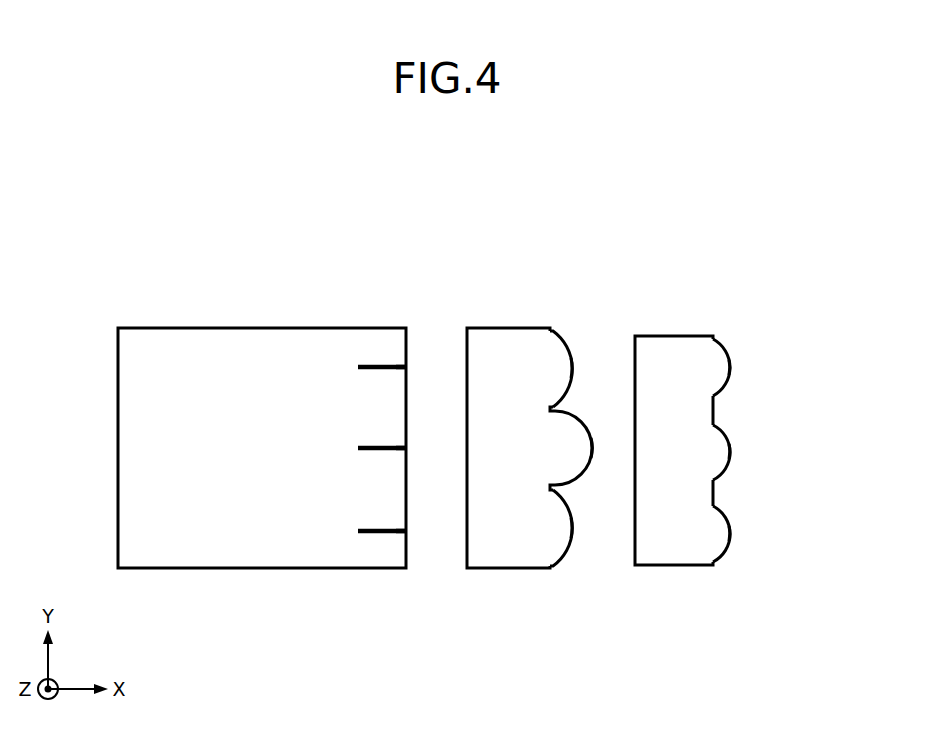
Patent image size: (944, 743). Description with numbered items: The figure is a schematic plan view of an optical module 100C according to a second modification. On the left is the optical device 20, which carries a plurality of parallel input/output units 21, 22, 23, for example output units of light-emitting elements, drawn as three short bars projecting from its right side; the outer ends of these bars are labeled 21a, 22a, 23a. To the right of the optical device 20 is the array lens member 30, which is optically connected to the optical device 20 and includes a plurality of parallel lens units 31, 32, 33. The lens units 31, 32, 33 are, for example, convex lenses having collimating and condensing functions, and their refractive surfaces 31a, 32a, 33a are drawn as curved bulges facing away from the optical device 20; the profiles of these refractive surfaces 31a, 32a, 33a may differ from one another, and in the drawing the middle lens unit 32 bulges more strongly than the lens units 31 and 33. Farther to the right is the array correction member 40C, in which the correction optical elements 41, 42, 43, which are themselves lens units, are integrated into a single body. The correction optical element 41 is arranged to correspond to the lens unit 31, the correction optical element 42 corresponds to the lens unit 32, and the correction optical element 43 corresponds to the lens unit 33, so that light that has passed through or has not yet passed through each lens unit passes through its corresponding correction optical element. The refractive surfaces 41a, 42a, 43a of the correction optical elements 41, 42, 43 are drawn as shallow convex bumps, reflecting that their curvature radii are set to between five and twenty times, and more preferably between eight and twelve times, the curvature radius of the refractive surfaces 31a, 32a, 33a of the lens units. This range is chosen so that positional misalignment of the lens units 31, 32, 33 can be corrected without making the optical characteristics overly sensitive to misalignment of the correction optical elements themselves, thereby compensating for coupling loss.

The optical module 100C is at (722, 182).
The optical device 20 is at (184, 316).
The input/output unit 21 is at (380, 364).
The emission end of first light emitting element 21a is at (409, 365).
The input/output unit 22 is at (372, 449).
The emission end of second light emitting element 22a is at (410, 449).
The input/output unit 23 is at (375, 533).
The emission end of third light emitting element 23a is at (408, 531).
The array lens member 30 is at (547, 445).
The lens unit 31 is at (562, 363).
The refractive surface 31a is at (573, 367).
The lens unit 32 is at (568, 450).
The refractive surface 32a is at (593, 446).
The lens unit 33 is at (557, 525).
The refractive surface 33a is at (572, 525).
The array correction member 40C is at (760, 434).
The correction optical element 41 is at (732, 349).
The refractive surface 41a is at (729, 368).
The correction optical element 42 is at (732, 430).
The apex of lens 42 42a is at (730, 450).
The correction optical element 43 is at (737, 549).
The refractive surface 43a is at (730, 527).